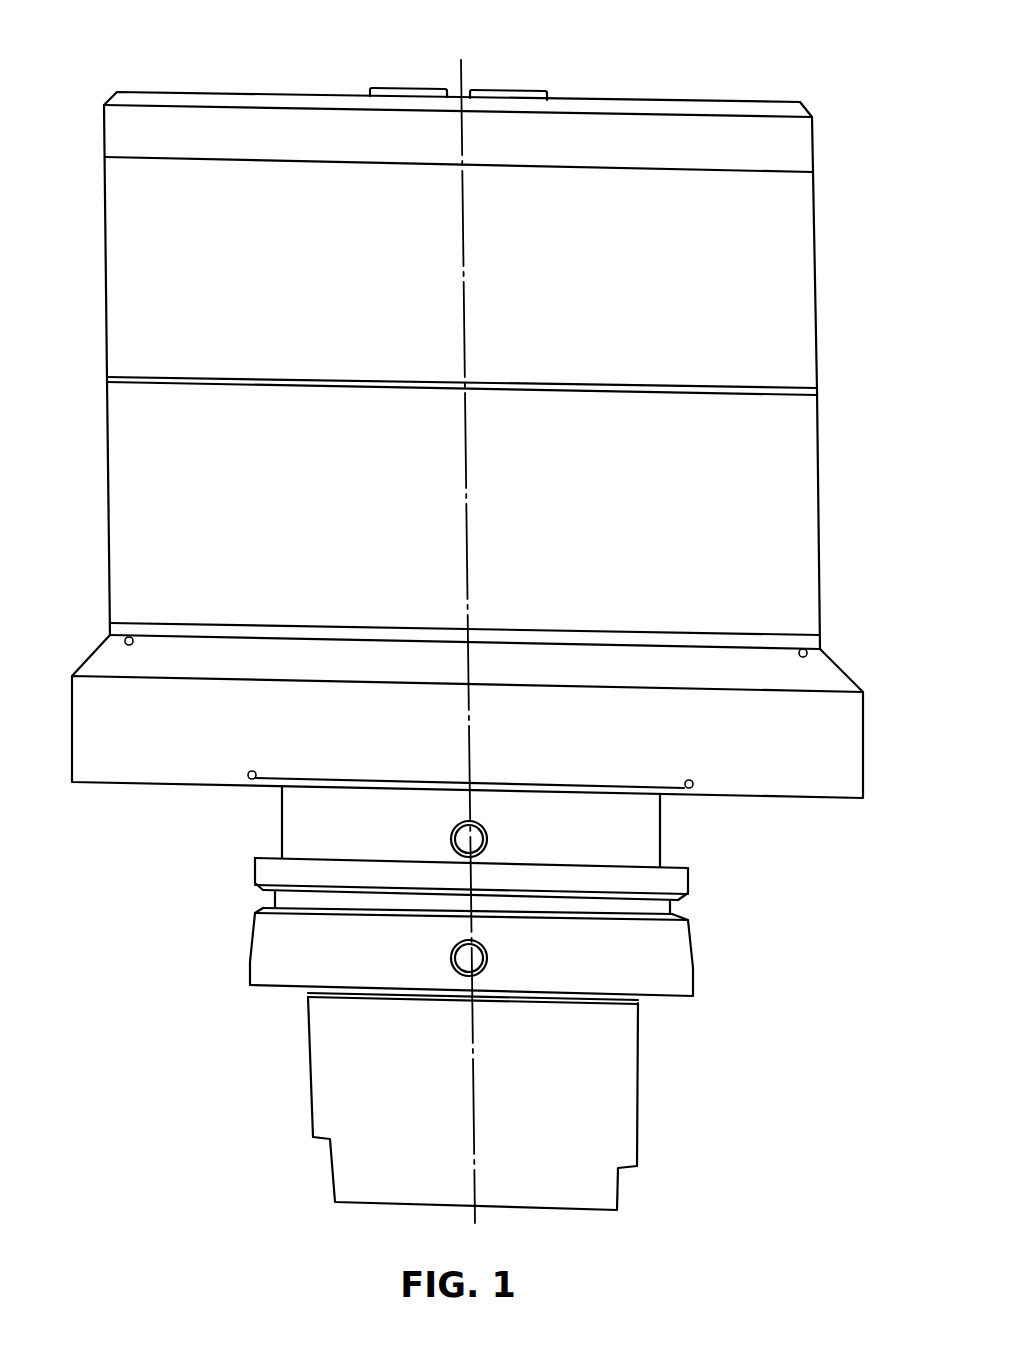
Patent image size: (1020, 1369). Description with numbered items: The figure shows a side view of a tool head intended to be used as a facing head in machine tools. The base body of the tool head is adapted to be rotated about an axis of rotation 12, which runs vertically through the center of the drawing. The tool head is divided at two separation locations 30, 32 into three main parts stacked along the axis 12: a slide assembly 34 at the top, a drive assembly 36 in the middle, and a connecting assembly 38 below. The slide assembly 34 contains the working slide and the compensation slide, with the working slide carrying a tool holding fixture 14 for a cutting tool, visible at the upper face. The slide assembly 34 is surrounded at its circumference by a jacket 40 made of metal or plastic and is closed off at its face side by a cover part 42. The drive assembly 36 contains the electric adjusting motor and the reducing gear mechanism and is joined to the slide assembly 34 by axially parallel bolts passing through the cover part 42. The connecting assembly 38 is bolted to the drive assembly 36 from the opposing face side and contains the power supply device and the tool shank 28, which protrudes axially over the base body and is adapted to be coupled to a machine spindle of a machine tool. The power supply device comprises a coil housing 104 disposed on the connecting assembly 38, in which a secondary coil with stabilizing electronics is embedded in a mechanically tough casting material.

The axis of rotation 12 is at (464, 352).
The tool holding fixture 14 is at (512, 95).
The tool shank 28 is at (593, 1042).
The separation location 30 is at (817, 391).
The separation location 32 is at (815, 645).
The slide assembly 34 is at (764, 296).
The drive assembly 36 is at (744, 488).
The connecting assembly 38 is at (624, 832).
The jacket 40 is at (740, 238).
The cover part 42 is at (717, 101).
The coil housing 104 is at (790, 762).